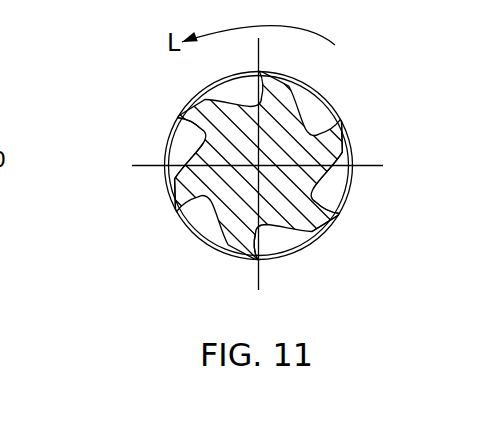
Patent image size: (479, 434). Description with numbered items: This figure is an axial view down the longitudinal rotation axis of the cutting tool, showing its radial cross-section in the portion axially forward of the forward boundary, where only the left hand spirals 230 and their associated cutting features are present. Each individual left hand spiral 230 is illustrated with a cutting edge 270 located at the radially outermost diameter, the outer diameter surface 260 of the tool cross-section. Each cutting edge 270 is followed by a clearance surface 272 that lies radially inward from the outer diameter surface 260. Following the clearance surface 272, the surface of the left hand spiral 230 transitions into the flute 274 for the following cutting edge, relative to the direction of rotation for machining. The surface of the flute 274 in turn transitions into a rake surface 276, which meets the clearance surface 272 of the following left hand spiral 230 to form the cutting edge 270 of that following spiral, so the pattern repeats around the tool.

The left hand spiral 230 is at (340, 135).
The outer diameter surface 260 is at (195, 240).
The cutting edge 270 is at (322, 122).
The clearance surface 272 is at (340, 150).
The flute 274 is at (336, 190).
The rake surface 276 is at (341, 204).